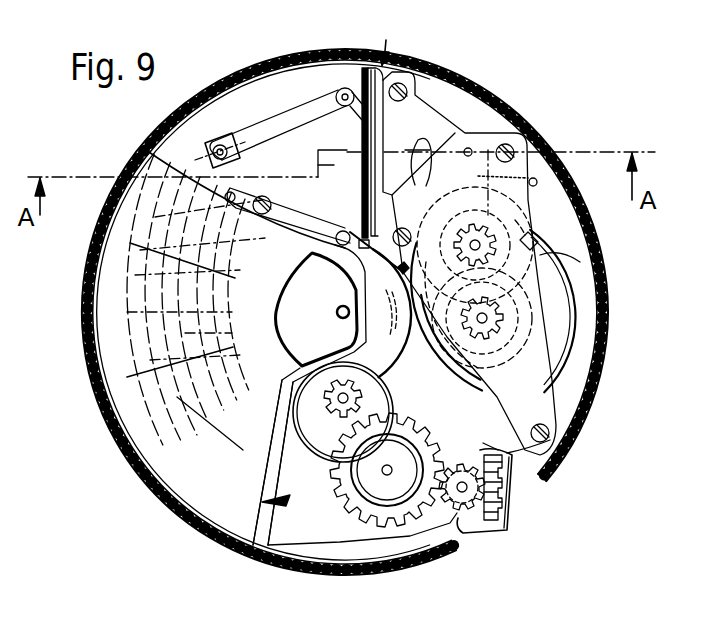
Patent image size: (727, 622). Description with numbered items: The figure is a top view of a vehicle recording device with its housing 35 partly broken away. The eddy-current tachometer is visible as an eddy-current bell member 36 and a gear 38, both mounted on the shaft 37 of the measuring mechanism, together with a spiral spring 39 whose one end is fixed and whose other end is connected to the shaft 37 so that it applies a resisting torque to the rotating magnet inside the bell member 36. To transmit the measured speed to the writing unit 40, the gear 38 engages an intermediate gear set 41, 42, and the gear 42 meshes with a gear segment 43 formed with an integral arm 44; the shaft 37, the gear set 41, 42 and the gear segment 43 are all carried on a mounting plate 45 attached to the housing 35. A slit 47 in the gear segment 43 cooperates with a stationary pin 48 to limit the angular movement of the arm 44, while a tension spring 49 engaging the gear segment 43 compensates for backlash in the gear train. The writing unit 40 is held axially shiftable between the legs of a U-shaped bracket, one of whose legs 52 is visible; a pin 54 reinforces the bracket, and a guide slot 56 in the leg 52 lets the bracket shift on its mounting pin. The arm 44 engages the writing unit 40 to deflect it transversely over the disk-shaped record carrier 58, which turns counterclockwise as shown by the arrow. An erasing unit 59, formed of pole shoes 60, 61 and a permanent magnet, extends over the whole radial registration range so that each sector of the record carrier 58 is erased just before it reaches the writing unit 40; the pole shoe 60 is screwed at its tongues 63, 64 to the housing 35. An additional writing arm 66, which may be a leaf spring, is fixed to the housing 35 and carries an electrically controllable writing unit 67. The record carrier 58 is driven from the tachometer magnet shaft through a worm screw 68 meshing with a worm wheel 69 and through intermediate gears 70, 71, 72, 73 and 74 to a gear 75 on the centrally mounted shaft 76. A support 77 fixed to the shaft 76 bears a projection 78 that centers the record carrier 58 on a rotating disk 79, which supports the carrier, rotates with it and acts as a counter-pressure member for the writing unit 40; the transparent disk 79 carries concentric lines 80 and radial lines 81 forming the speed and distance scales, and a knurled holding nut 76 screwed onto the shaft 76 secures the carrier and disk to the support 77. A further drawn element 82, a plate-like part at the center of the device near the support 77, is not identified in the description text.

The housing 35 is at (605, 325).
The eddy-current bell member 36 is at (566, 302).
The shaft of the measuring mechanism 37 is at (478, 326).
The gear 38 is at (505, 348).
The spiral spring 39 is at (580, 262).
The writing unit 40 is at (343, 90).
The intermediate gear set gear 41 is at (530, 220).
The intermediate gear set gear 42 is at (468, 256).
The gear segment 43 is at (460, 130).
The arm 44 is at (408, 96).
The mounting plate 45 is at (525, 425).
The slit 47 is at (430, 150).
The pin 48 is at (425, 182).
The tension spring 49 is at (537, 186).
The leg of mounting bracket 52 is at (268, 132).
The pin 54 is at (330, 98).
The guide slot 56 is at (238, 160).
The record carrier 58 is at (272, 538).
The erasing unit 59 is at (375, 37).
The pole shoe 60 is at (370, 134).
The pole shoe 61 is at (366, 167).
The tongue 63 is at (372, 72).
The tongue 64 is at (358, 246).
The writing arm 66 is at (300, 210).
The writing unit 67 is at (345, 225).
The worm screw 68 is at (505, 520).
The worm wheel 69 is at (456, 452).
The intermediate gear 70 is at (444, 506).
The intermediate gear 71 is at (365, 505).
The intermediate gear 72 is at (365, 485).
The intermediate gear 73 is at (330, 452).
The intermediate gear 74 is at (342, 412).
The gear 75 is at (364, 402).
The shaft 76 is at (337, 314).
The support 77 is at (392, 357).
The projection 78 is at (426, 317).
The rotating disk 79 is at (172, 508).
The concentric lines 80 is at (130, 265).
The radial lines 81 is at (128, 345).
The shield plate 82 is at (282, 318).